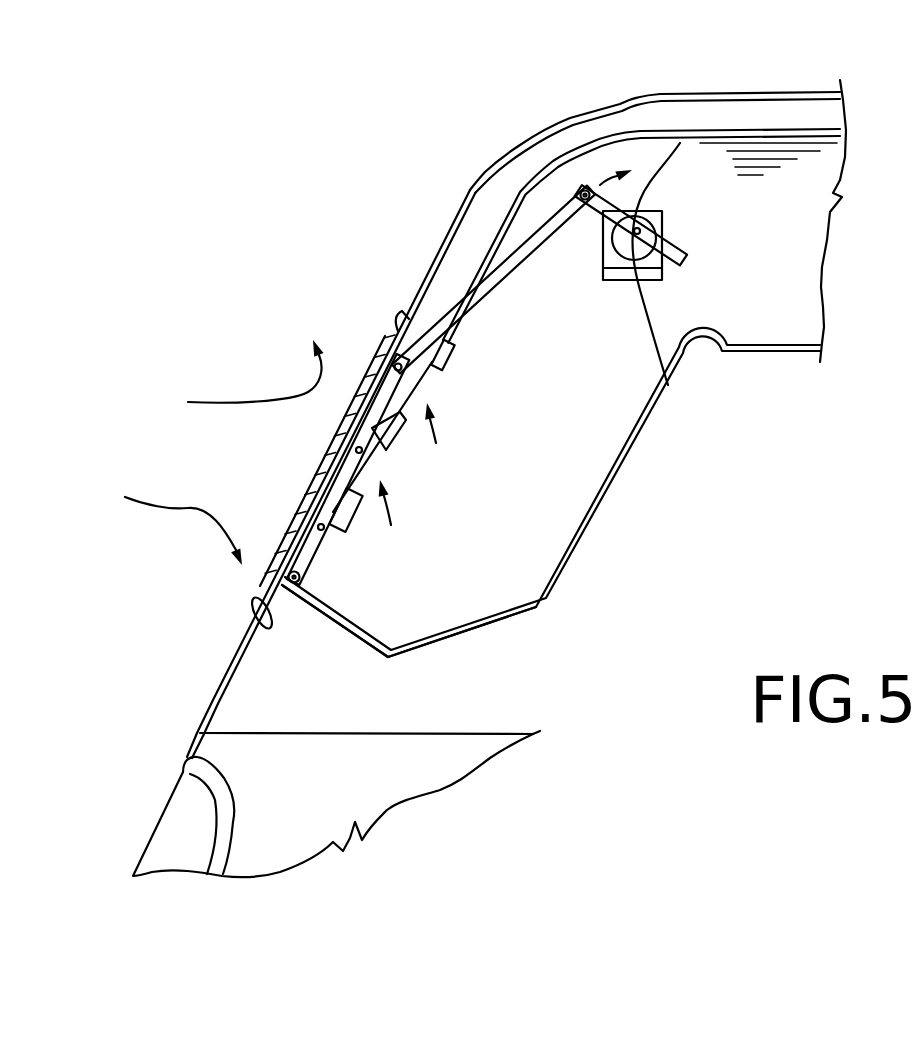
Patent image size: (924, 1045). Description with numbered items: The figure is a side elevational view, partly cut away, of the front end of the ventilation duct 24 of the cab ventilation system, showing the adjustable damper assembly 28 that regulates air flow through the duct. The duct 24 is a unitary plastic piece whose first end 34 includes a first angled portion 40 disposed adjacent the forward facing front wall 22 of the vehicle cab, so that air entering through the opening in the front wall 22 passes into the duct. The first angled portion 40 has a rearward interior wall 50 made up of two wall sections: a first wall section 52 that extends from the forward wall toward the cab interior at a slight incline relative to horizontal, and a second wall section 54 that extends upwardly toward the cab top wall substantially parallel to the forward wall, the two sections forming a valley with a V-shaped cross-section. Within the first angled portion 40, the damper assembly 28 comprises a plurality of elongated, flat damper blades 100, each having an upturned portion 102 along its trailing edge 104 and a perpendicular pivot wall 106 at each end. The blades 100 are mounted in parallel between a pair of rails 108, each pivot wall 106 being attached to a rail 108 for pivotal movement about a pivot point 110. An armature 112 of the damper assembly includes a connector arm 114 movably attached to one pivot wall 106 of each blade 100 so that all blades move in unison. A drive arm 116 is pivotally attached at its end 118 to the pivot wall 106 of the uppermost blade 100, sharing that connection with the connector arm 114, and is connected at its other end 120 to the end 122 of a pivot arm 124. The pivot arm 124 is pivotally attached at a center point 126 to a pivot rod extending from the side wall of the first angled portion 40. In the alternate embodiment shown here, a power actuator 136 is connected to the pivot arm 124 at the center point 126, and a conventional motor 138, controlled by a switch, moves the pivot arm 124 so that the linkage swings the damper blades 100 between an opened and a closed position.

The front wall 22 is at (418, 290).
The duct 24 is at (792, 54).
The adjustable damper assembly 28 is at (523, 435).
The first end 34 is at (253, 355).
The first angled portion 40 is at (405, 252).
The interior wall 50 is at (609, 514).
The first wall section 52 is at (332, 622).
The second wall section 54 is at (550, 577).
The damper blades 100 is at (393, 443).
The upturned portion 102 is at (445, 352).
The trailing edge 104 is at (449, 341).
The pivot wall 106 is at (416, 383).
The rails 108 is at (307, 550).
The pivot point 110 is at (255, 645).
The armature 112 is at (442, 282).
The connector arm 114 is at (350, 468).
The drive arm 116 is at (563, 218).
The end of drive arm 118 is at (398, 364).
The end of drive arm 120 is at (583, 190).
The end of pivot arm 122 is at (680, 143).
The pivot arm 124 is at (593, 203).
The center point 126 is at (645, 232).
The power actuator 136 is at (677, 296).
The motor 138 is at (668, 385).